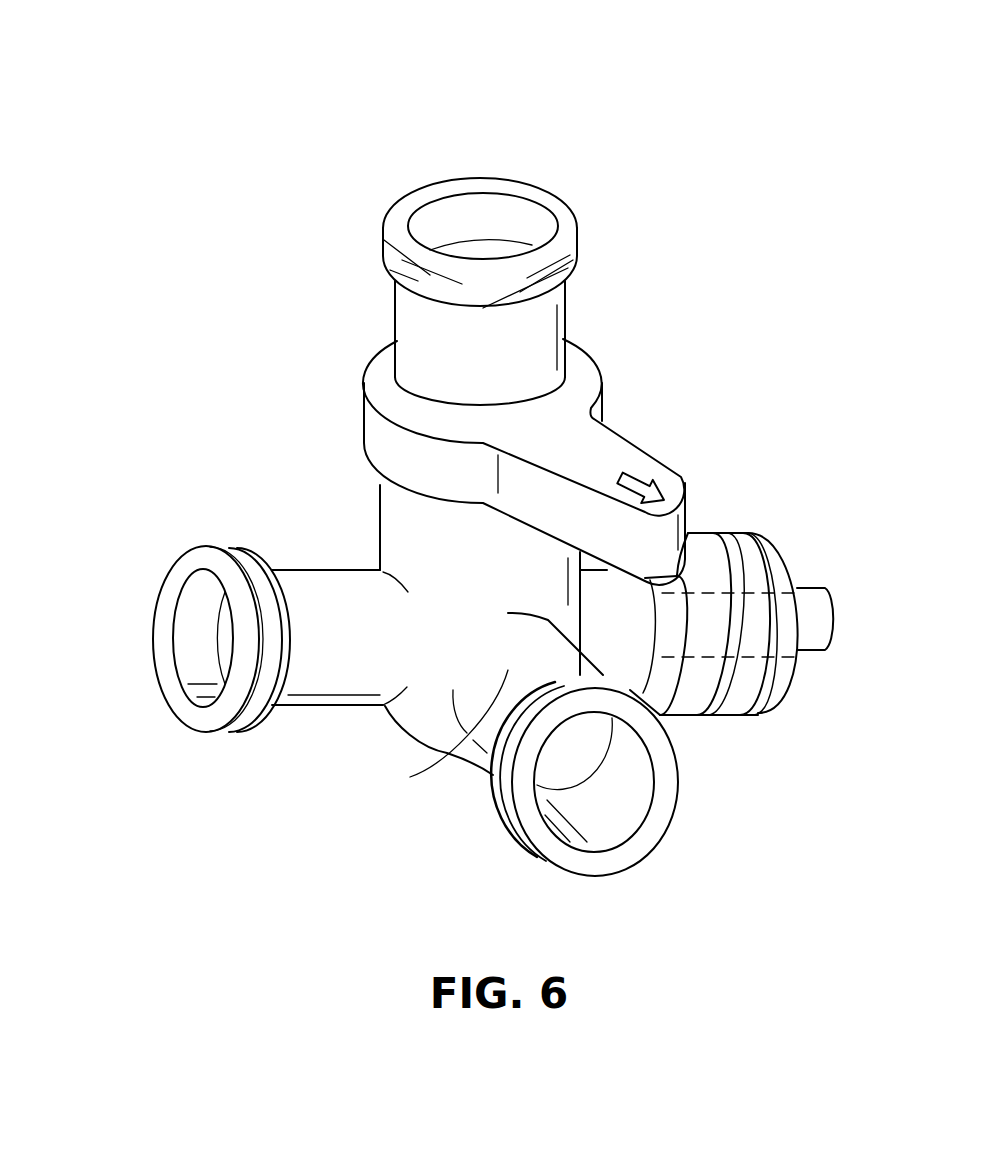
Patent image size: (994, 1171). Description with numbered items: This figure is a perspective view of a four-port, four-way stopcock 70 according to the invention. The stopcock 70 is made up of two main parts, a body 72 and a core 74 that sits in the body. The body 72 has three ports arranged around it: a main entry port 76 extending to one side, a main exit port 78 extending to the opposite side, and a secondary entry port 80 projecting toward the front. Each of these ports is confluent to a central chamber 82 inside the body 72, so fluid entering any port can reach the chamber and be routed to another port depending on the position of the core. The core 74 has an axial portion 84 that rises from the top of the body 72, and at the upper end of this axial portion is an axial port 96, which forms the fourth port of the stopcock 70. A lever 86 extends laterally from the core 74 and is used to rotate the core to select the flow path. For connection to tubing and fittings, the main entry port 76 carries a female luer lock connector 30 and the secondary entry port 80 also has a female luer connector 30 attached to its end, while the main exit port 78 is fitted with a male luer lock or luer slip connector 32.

The four-port, four-way stopcock 70 is at (560, 148).
The female luer lock connector 30 is at (572, 256).
The axial port 96 is at (440, 218).
The axial portion 84 is at (395, 303).
The core 74 is at (597, 383).
The lever 86 is at (650, 450).
The central chamber 82 is at (462, 555).
The body 72 is at (330, 647).
The male luer lock or luer slip connector 32 is at (748, 533).
The main exit port 78 is at (797, 578).
The main entry port 76 is at (175, 660).
The secondary entry port 80 is at (617, 840).